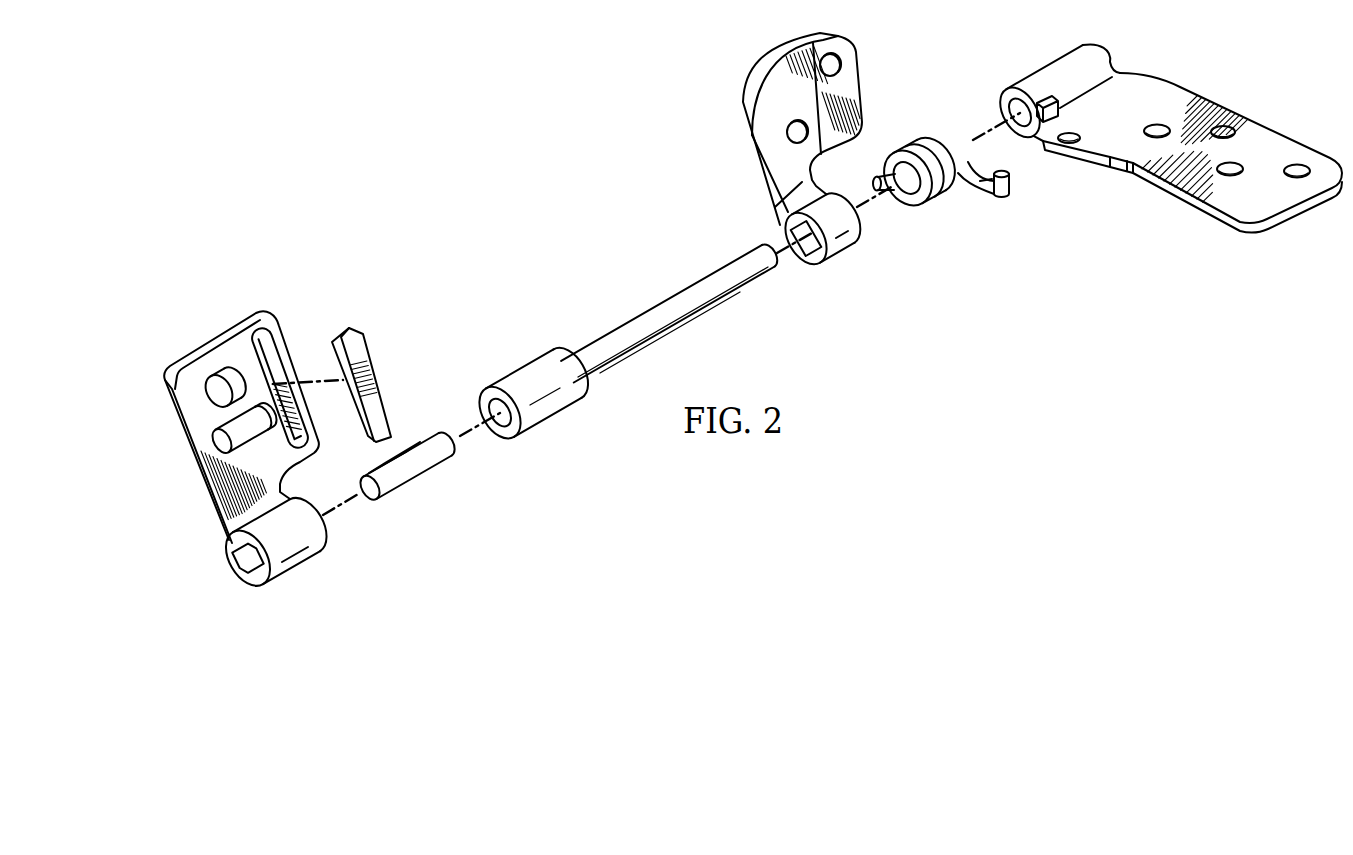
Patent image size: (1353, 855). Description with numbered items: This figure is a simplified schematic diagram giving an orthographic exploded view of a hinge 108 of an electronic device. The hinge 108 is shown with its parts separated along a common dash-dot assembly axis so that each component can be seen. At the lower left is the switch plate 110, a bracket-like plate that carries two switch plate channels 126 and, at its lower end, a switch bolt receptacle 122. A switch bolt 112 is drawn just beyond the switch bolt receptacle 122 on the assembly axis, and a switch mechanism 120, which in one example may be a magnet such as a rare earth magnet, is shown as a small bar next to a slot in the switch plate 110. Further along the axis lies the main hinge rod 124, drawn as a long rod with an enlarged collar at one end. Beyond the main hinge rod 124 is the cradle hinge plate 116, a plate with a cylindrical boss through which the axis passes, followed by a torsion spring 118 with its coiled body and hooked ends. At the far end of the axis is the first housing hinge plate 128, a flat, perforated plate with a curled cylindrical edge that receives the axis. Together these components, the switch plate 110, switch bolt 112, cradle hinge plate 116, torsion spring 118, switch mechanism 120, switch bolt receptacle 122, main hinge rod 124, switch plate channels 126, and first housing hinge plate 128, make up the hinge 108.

The hinge 108 is at (416, 140).
The switch plate 110 is at (206, 477).
The switch bolt 112 is at (414, 486).
The cradle hinge plate 116 is at (839, 254).
The torsion spring 118 is at (931, 131).
The switch mechanism 120 is at (363, 343).
The switch bolt receptacle 122 is at (253, 570).
The main hinge rod 124 is at (634, 318).
The switch plate channels 126 is at (214, 374).
The first housing hinge plate 128 is at (1282, 140).